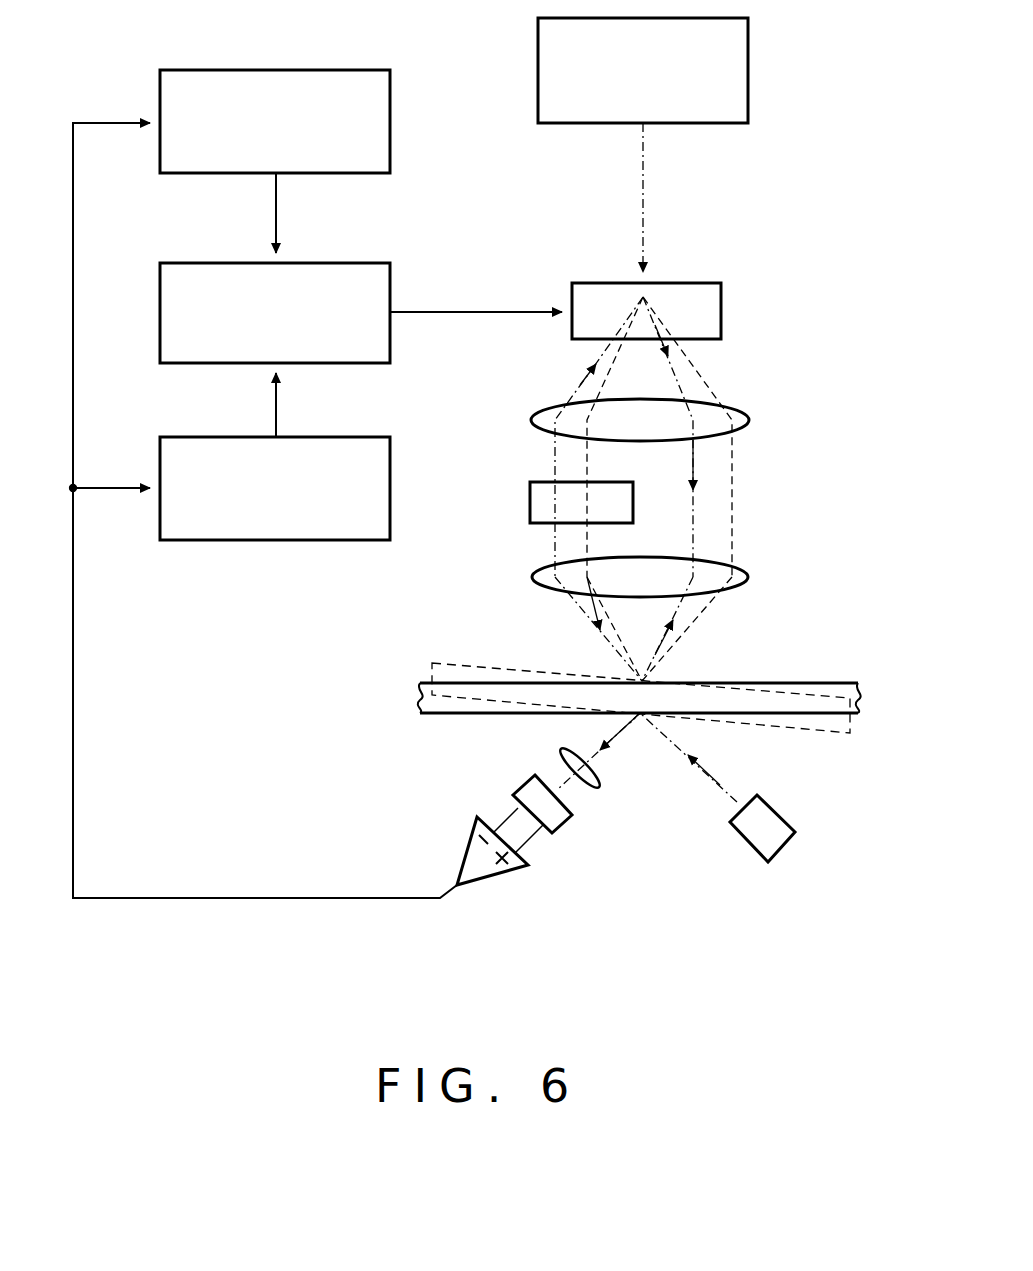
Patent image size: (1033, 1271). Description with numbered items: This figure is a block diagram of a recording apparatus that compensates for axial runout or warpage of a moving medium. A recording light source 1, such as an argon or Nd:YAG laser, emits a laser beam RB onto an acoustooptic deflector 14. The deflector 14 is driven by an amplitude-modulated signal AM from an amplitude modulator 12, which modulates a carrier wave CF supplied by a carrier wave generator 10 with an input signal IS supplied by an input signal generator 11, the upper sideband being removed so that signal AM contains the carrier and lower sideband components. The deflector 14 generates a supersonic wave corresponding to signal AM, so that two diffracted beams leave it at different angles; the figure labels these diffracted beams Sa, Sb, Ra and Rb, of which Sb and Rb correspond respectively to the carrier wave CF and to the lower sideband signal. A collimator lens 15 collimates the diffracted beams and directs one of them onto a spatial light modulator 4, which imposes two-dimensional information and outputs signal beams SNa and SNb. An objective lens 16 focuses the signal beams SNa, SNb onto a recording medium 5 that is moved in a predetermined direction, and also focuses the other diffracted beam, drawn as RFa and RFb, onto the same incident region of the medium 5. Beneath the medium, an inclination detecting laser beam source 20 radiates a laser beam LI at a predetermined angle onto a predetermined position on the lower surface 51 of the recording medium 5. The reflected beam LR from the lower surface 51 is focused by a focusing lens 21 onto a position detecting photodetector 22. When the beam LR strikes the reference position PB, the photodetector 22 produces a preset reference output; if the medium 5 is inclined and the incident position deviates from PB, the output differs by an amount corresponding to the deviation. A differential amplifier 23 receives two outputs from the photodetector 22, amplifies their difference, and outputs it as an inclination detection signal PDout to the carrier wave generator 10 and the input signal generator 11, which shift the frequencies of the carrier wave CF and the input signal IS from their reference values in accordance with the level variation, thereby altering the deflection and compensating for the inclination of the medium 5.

The carrier wave generator 10 is at (318, 68).
The amplitude modulator 12 is at (160, 280).
The input signal generator 11 is at (203, 437).
The recording light source 1 is at (749, 106).
The acoustooptic deflector 14 is at (722, 300).
The collimator lens 15 is at (745, 422).
The spatial light modulator 4 is at (530, 500).
The objective lens 16 is at (745, 575).
The recording medium 5 is at (820, 695).
The lower surface 51 is at (462, 700).
The inclination detecting laser beam source 20 is at (790, 845).
The focusing lens 21 is at (596, 788).
The position detecting photodetector 22 is at (558, 832).
The differential amplifier 23 is at (503, 880).
The carrier wave CF is at (277, 212).
The amplitude-modulated signal AM is at (470, 311).
The input signal IS is at (277, 402).
The laser beam RB is at (643, 212).
The signal beam a Sa is at (570, 392).
The diffracted beam Sb is at (605, 378).
The reference beam a Ra is at (690, 357).
The diffracted beam Rb is at (720, 388).
The signal beam SNa is at (560, 605).
The signal beam SNb is at (590, 625).
The reference beam a after lens RFa is at (690, 617).
The reference beam b after lens RFb is at (670, 642).
The reference position PB is at (562, 788).
The reflected beam LR is at (632, 720).
The laser beam LI is at (735, 800).
The inclination detection signal PDout is at (218, 900).